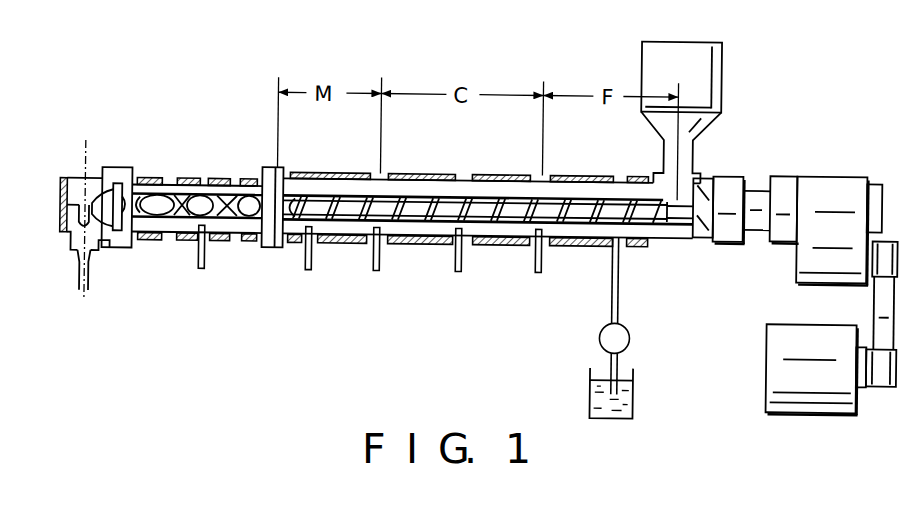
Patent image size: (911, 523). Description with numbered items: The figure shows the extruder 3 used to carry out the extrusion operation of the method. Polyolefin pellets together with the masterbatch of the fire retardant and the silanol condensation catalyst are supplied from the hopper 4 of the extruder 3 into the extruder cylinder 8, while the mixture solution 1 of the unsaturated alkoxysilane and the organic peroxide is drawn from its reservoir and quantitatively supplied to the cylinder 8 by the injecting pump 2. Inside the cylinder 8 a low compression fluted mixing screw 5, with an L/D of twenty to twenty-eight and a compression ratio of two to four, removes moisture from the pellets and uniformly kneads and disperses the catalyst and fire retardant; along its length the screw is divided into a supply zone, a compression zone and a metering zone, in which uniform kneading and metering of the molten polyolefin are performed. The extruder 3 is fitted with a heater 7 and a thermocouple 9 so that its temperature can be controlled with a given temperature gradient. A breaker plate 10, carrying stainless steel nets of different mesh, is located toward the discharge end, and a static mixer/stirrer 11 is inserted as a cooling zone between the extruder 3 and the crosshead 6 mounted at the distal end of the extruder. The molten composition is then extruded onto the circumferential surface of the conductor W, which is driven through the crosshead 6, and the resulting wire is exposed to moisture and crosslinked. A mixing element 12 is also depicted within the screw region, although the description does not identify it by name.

The mixture solution 1 is at (636, 393).
The injecting pump 2 is at (600, 336).
The extruder 3 is at (740, 173).
The hopper 4 is at (722, 64).
The screw 5 is at (320, 225).
The crosshead 6 is at (92, 254).
The heater 7 is at (60, 208).
The extruder cylinder 8 is at (462, 190).
The thermocouple 9 is at (202, 265).
The breaker plate 10 is at (120, 236).
The static mixer/stirrer 11 is at (150, 181).
The mixing screw section 12 is at (200, 195).
The conductor W is at (84, 154).